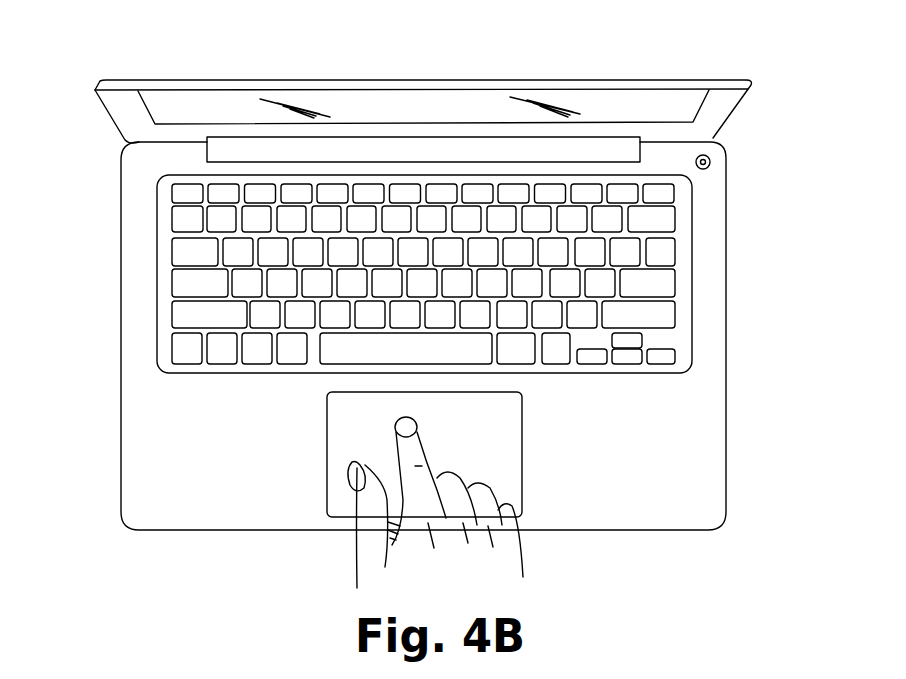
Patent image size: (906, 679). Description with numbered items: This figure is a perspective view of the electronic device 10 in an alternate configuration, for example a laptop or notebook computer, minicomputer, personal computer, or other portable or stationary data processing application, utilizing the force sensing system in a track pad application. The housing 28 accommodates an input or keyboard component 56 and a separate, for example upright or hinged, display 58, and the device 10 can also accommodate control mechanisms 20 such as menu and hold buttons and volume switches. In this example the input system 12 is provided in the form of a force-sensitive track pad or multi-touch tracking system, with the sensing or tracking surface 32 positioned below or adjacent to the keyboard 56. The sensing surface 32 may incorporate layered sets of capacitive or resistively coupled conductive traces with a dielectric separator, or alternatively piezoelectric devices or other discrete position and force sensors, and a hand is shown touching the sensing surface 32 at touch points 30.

The electronic device 10 is at (98, 43).
The housing assembly 28 is at (115, 120).
The display 58 is at (722, 112).
The control mechanisms 20 is at (710, 163).
The keyboard component 56 is at (705, 266).
The input system 12 is at (302, 466).
The sensing surface 32 is at (489, 433).
The touch points 30 is at (395, 422).